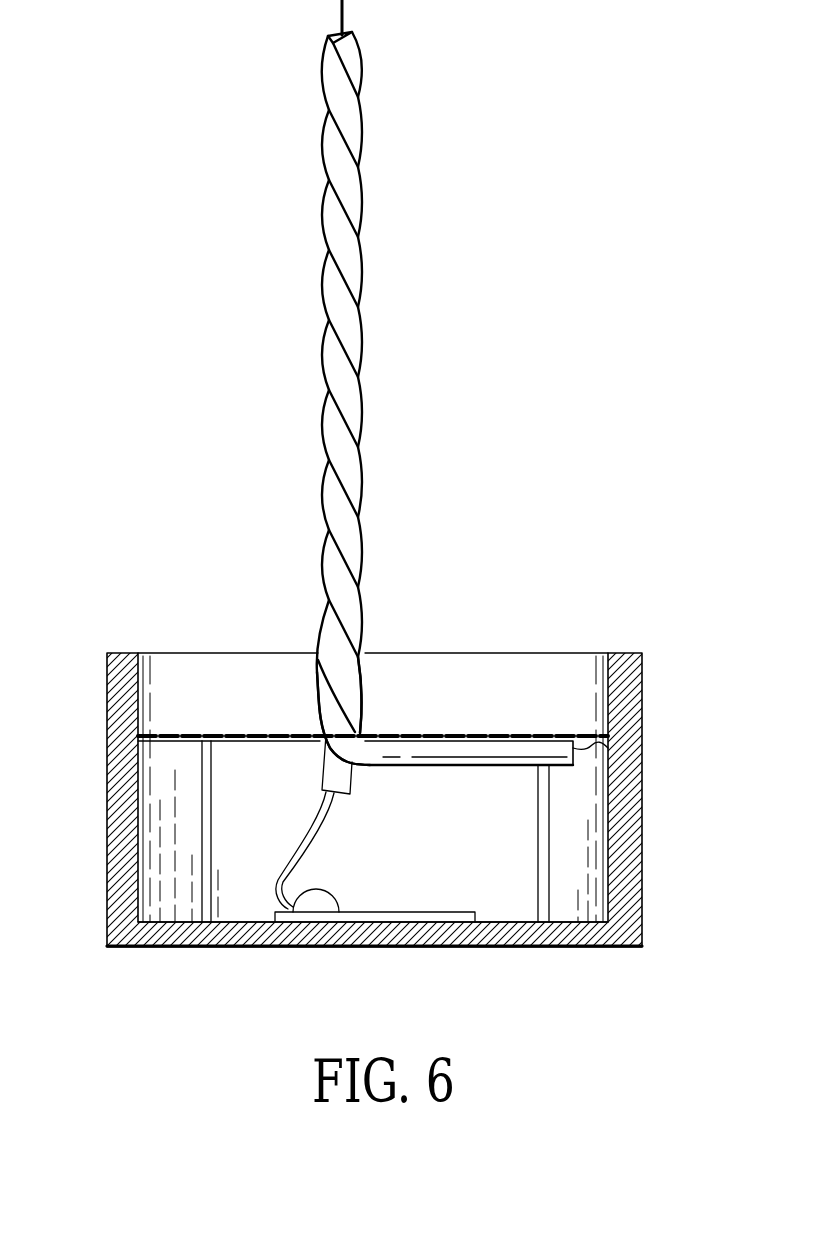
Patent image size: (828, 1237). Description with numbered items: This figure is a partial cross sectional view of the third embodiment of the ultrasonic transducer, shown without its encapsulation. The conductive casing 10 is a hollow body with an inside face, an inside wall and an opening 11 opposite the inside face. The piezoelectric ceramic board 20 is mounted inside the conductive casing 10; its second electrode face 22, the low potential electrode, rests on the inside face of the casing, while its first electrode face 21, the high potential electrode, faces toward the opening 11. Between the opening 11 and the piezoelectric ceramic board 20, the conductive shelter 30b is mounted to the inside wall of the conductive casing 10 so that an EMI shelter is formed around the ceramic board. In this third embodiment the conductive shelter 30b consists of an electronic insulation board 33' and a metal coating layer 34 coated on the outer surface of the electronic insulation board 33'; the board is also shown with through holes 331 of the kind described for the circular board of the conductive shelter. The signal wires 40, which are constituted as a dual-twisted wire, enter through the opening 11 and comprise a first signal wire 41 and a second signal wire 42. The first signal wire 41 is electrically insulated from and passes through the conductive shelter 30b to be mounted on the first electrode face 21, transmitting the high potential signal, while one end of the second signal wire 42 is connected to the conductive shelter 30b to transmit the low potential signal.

The conductive casing 10 is at (640, 826).
The opening 11 is at (609, 700).
The piezoelectric ceramic board 20 is at (450, 905).
The first electrode face 21 is at (375, 912).
The second electrode face 22 is at (450, 922).
The conductive shelter 30b is at (381, 722).
The electronic insulation board 33' is at (181, 831).
The through holes 331 is at (322, 668).
The metal coating layer 34 is at (527, 737).
The signal wires 40 is at (378, 252).
The first signal wire 41 is at (335, 768).
The second signal wire 42 is at (463, 748).